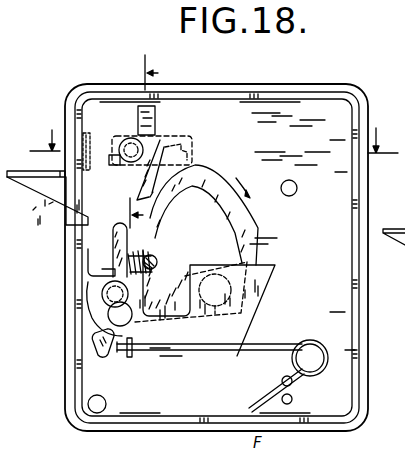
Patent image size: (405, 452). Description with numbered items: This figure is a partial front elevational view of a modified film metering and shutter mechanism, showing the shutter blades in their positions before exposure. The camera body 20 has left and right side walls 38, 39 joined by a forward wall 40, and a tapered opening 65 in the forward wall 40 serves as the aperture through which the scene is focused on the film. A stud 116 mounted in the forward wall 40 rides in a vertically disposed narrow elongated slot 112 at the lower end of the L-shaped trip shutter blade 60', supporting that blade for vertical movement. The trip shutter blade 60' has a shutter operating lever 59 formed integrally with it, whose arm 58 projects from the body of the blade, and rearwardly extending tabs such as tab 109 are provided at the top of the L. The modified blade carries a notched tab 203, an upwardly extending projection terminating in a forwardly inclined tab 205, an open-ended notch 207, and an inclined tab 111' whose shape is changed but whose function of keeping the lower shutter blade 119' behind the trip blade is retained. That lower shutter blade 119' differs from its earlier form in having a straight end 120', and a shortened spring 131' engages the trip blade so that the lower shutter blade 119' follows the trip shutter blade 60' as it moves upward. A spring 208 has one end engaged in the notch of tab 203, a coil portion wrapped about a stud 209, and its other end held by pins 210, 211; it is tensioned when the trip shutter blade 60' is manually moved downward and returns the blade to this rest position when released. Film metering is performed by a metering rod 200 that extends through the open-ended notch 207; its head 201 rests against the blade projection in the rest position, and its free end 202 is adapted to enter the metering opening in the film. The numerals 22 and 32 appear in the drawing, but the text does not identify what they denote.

The forward wall 40 is at (310, 107).
The right side wall 39 is at (368, 305).
The left side wall 38 is at (70, 352).
The free end 202 is at (122, 434).
The section line 22- 22 is at (148, 143).
The camera body 20 is at (213, 140).
The shutter operating lever 59 is at (11, 170).
The arm 58 is at (35, 208).
The rearwardly extending tab 109 is at (84, 140).
The forwardly inclined tab 205 is at (156, 113).
The metering rod 200 is at (160, 141).
The head 201 is at (128, 139).
The open-ended notch 207 is at (114, 166).
The latch member 32 is at (194, 151).
The inclined tab 111' is at (172, 176).
The straight end 120' is at (226, 215).
The lower shutter blade 119' is at (268, 207).
The trip shutter blade 60' is at (219, 303).
The aperture 65 is at (215, 305).
The elongated slot 112 is at (130, 240).
The spring 131' is at (161, 260).
The stud 116 is at (101, 294).
The spring 208 is at (263, 351).
The notched tab 203 is at (127, 357).
The stud 209 is at (313, 341).
The pin 211 is at (282, 382).
The pin 210 is at (293, 399).